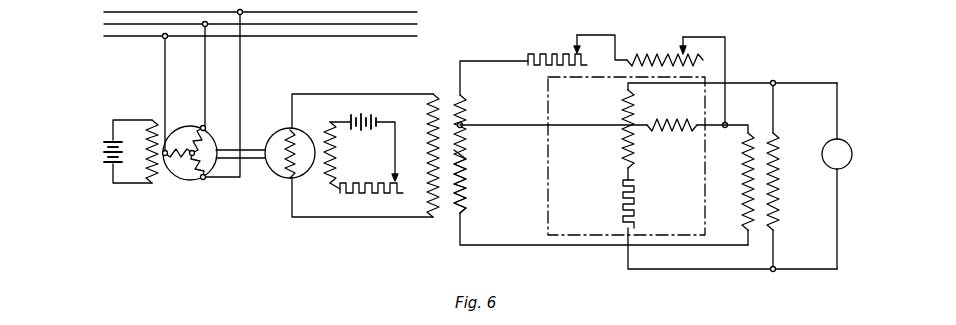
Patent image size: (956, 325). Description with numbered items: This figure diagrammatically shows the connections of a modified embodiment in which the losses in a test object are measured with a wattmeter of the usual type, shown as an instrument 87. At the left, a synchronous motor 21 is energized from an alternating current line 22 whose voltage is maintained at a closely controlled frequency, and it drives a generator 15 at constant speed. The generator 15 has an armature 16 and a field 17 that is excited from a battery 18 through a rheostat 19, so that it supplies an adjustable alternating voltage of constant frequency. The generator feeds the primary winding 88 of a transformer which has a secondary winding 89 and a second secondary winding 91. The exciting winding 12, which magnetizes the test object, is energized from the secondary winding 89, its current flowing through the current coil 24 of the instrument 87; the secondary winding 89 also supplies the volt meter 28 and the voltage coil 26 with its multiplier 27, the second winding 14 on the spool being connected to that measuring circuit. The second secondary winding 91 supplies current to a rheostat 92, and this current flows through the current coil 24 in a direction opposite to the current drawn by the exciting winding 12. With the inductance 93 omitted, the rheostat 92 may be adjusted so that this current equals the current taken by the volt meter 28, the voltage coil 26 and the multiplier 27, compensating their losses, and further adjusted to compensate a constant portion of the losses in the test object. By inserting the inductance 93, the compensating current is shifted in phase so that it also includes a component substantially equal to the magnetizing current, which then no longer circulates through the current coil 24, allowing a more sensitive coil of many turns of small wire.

The alternating current line 22 is at (417, 14).
The synchronous motor 21 is at (178, 201).
The generator 15 is at (316, 210).
The armature 16 is at (284, 134).
The field 17 is at (336, 160).
The battery 18 is at (363, 114).
The rheostat 19 is at (364, 193).
The primary winding 88 is at (428, 144).
The second secondary winding 91 is at (467, 99).
The secondary winding 89 is at (467, 180).
The rheostat 92 is at (549, 54).
The inductance 93 is at (649, 55).
The instrument 87 is at (548, 209).
The voltage coil 26 is at (626, 101).
The current coil 24 is at (672, 120).
The multiplier 27 is at (622, 196).
The exciting winding 12 is at (742, 189).
The second winding 14 is at (779, 205).
The volt meter 28 is at (827, 142).